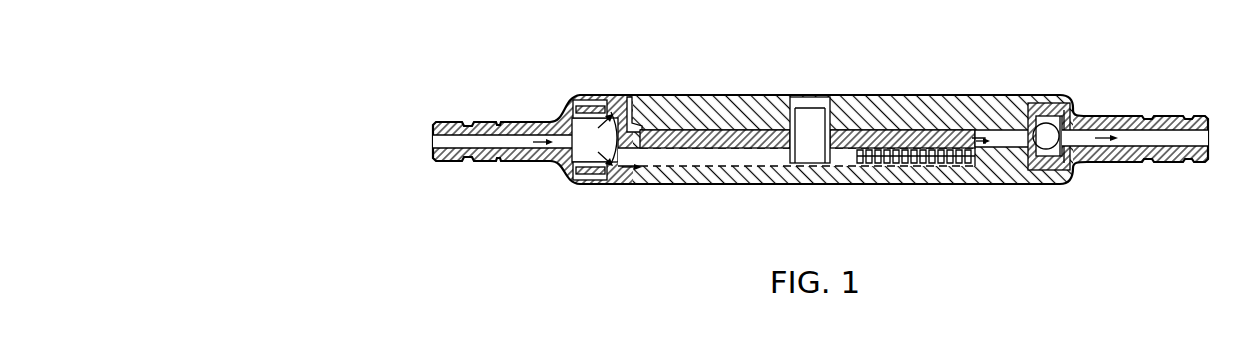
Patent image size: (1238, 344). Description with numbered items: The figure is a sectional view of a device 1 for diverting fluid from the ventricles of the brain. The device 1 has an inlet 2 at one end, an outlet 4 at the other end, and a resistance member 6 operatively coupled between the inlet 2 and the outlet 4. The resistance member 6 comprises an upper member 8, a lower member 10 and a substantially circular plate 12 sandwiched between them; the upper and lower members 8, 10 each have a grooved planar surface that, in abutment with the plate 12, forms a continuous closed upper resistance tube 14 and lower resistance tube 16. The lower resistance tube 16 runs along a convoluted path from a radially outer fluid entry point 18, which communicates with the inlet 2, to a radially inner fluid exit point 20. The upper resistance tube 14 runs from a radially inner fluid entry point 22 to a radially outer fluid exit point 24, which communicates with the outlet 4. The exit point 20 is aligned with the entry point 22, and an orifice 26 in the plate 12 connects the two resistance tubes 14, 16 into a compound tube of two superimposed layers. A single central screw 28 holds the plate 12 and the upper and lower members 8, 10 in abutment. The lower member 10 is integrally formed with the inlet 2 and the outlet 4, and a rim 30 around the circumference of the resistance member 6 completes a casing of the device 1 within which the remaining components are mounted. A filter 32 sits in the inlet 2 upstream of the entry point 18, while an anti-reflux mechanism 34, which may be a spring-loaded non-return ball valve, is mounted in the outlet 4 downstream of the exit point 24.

The device 1 is at (416, 236).
The inlet 2 is at (493, 140).
The outlet 4 is at (1155, 132).
The resistance member 6 is at (662, 218).
The upper member 8 is at (862, 122).
The lower member 10 is at (968, 170).
The plate 12 is at (852, 170).
The upper resistance tube 14 is at (935, 123).
The lower resistance tube 16 is at (917, 168).
The fluid entry point 18 is at (620, 180).
The fluid exit point 20 is at (767, 183).
The fluid entry point 22 is at (722, 96).
The fluid exit point 24 is at (972, 123).
The orifice 26 is at (748, 130).
The central screw 28 is at (810, 117).
The rim 30 is at (622, 96).
The filter 32 is at (587, 137).
The anti-reflux mechanism 34 is at (1040, 130).